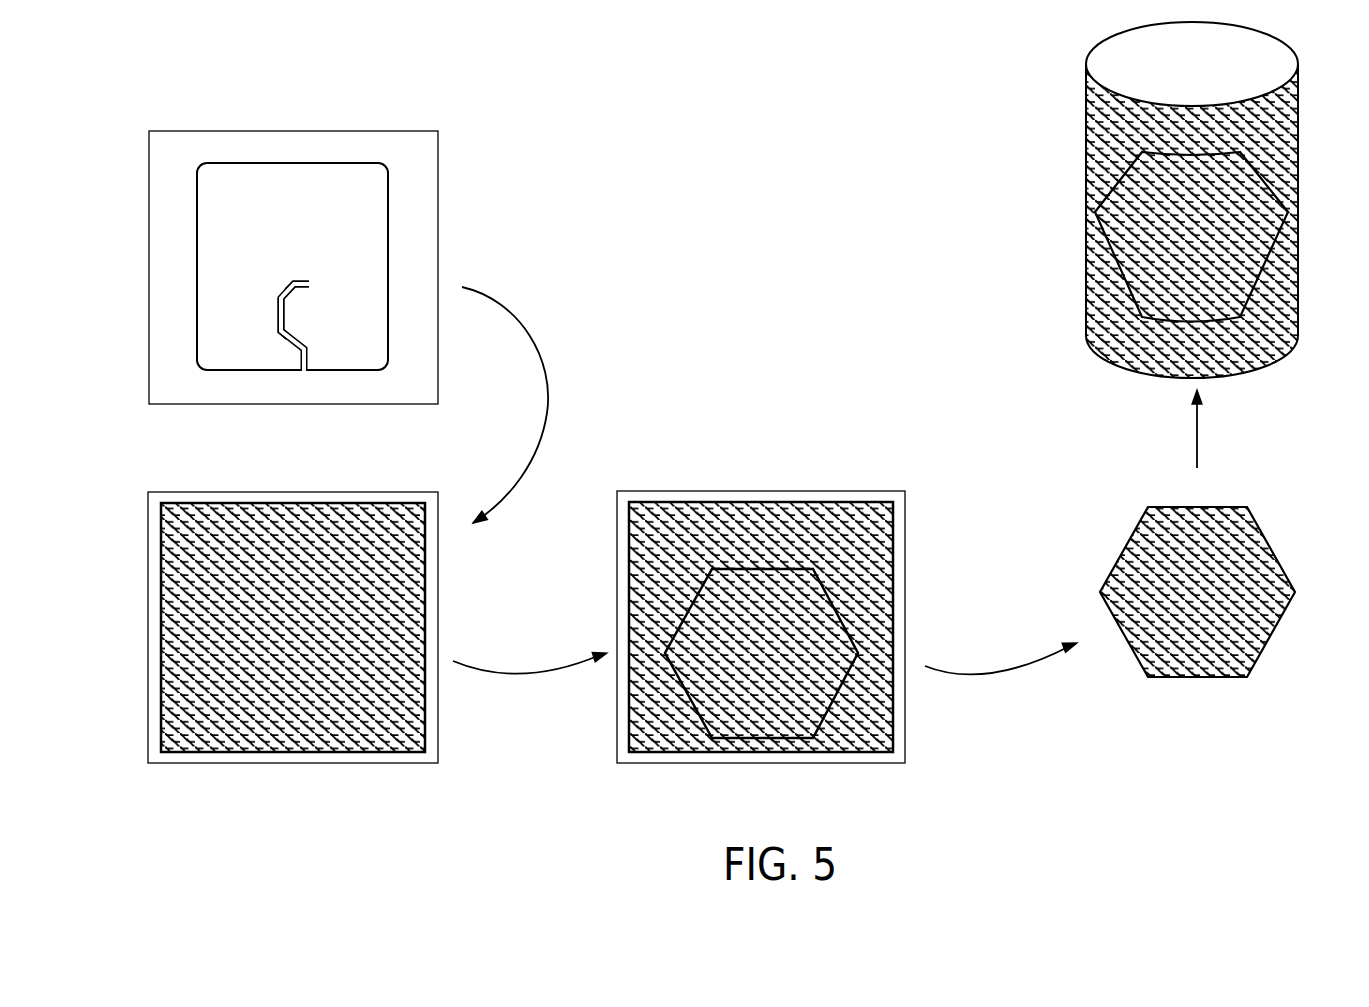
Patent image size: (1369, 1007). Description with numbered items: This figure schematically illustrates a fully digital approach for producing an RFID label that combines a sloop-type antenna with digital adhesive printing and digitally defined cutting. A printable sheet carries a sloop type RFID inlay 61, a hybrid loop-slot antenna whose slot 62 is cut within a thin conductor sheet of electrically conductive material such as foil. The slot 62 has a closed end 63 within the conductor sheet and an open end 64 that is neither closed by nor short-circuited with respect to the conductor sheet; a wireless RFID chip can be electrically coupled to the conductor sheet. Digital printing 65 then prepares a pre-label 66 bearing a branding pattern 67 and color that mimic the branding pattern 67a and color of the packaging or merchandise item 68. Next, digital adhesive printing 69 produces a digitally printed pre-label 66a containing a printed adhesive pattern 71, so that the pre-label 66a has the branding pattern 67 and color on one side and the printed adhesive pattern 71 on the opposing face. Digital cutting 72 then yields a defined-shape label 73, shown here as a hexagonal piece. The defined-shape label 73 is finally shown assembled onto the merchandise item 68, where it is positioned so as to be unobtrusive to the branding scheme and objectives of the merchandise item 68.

The sloop type RFID inlay 61 is at (310, 284).
The slot 62 is at (283, 288).
The closed end 63 is at (307, 282).
The open end 64 is at (307, 370).
The digital printing 65 is at (547, 393).
The pre-label 66 is at (438, 590).
The digitally printed pre-label 66a is at (787, 502).
The branding pattern 67 is at (268, 750).
The branding pattern of the merchandise item 67a is at (1128, 352).
The merchandise item 68 is at (1086, 118).
The digital adhesive printing 69 is at (535, 675).
The printed adhesive pattern 71 is at (778, 752).
The digital cutting 72 is at (1003, 674).
The defined-shape label 73 is at (1115, 186).